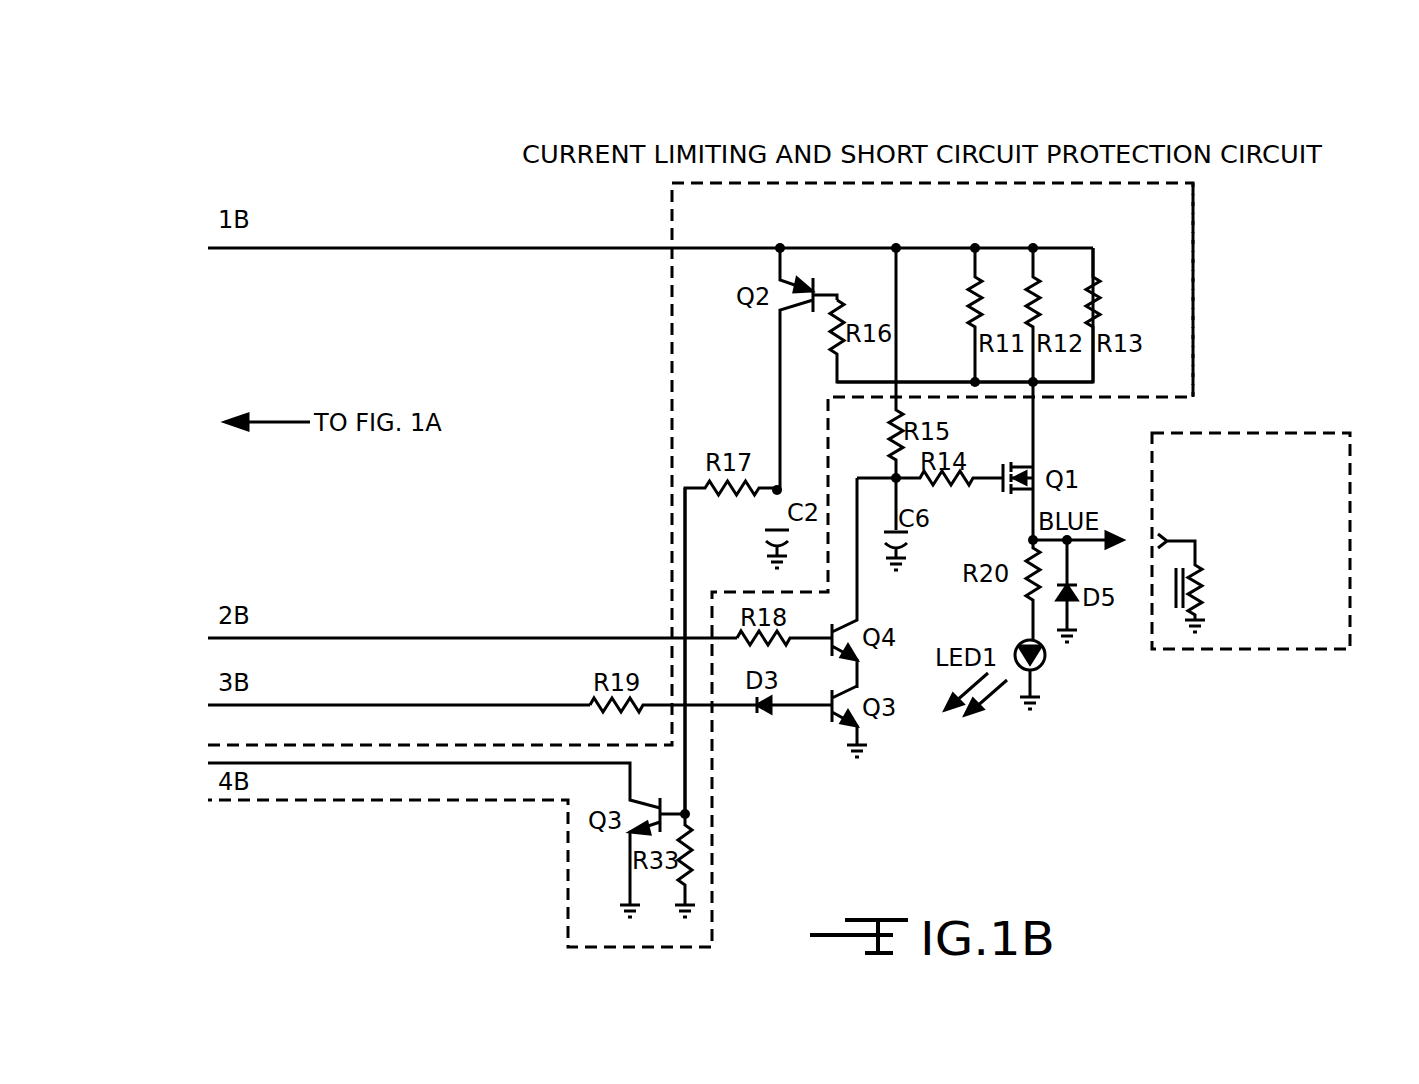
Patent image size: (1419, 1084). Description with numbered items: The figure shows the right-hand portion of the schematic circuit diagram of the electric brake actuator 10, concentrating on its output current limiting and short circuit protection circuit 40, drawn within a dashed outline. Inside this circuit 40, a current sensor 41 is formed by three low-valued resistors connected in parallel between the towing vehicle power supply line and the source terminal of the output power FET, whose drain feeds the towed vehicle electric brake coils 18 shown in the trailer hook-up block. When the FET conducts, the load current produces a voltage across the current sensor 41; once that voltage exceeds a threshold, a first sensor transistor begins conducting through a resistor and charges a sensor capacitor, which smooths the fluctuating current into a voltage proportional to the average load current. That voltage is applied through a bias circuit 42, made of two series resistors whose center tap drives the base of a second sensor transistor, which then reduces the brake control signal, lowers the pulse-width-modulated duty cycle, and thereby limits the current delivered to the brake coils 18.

The actuator 10 is at (652, 208).
The output current limiting and short circuit protection circuit 40 is at (1195, 188).
The current sensor 41 is at (1102, 251).
The bias circuit 42 is at (683, 573).
The electric brake coils 18 is at (1173, 610).